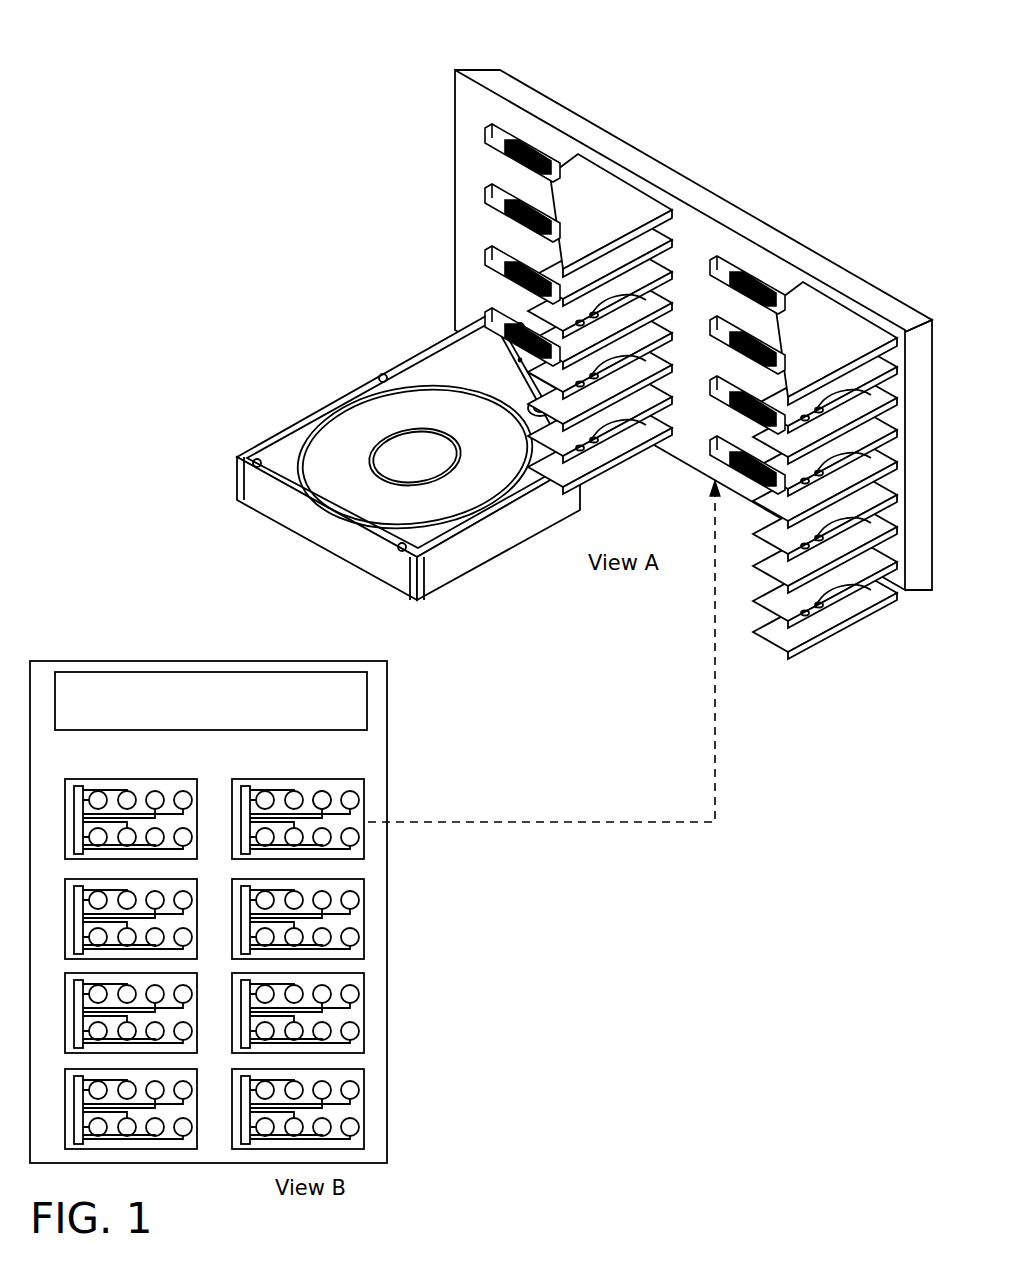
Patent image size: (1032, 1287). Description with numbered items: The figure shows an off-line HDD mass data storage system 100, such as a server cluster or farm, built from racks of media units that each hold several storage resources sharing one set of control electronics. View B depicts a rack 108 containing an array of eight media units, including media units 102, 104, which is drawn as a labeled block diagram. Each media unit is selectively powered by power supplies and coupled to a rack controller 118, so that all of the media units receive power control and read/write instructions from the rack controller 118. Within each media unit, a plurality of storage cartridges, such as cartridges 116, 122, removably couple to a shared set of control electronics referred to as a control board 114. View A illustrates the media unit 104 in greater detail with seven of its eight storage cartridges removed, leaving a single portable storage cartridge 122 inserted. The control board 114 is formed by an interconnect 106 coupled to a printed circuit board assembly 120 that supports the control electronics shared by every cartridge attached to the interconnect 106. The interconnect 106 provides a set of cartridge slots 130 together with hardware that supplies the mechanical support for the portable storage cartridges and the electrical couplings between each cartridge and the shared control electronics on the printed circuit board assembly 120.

The off-line HDD mass data storage system 100 is at (210, 212).
The media unit 102 is at (150, 778).
The media unit 104 is at (367, 266).
The interconnect 106 is at (487, 103).
The rack 108 is at (241, 870).
The control board 114 is at (428, 107).
The storage cartridge 116 is at (322, 803).
The rack controller 118 is at (229, 724).
The printed circuit board assembly 120 is at (560, 118).
The storage cartridge 122 is at (237, 497).
The slots 130 is at (672, 417).